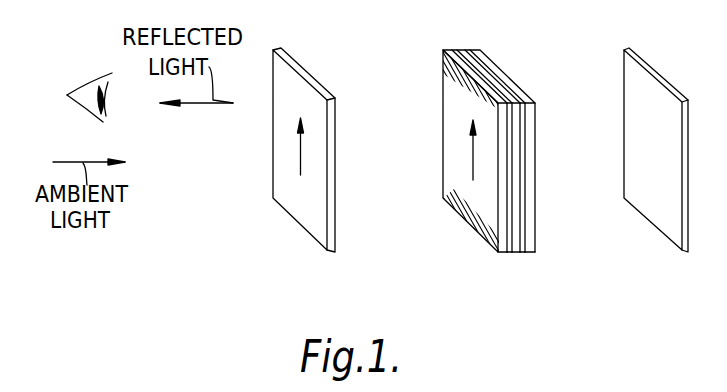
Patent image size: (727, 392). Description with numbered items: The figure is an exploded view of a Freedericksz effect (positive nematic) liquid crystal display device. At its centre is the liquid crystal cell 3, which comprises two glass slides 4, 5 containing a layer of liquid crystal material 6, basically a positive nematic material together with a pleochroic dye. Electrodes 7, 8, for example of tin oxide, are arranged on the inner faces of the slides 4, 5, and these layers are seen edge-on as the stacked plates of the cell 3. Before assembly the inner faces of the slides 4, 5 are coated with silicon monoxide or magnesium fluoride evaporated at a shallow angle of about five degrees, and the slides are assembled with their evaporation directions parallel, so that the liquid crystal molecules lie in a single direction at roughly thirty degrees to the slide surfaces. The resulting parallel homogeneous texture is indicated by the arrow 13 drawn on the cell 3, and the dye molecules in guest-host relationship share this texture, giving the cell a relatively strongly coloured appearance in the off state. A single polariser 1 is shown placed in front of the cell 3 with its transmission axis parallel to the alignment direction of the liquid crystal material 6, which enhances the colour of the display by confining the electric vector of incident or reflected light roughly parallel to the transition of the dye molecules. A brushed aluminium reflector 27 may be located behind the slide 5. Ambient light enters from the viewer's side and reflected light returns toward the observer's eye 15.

The polariser 1 is at (327, 250).
The liquid crystal cell 3 is at (478, 161).
The glass slide 4 is at (499, 252).
The glass slide 5 is at (535, 252).
The layer of liquid crystal material 6 is at (517, 252).
The electrode 7 is at (509, 252).
The electrode 8 is at (523, 252).
The arrow 13 is at (473, 180).
The observer eye 15 is at (90, 87).
The brushed aluminium reflector 27 is at (682, 250).